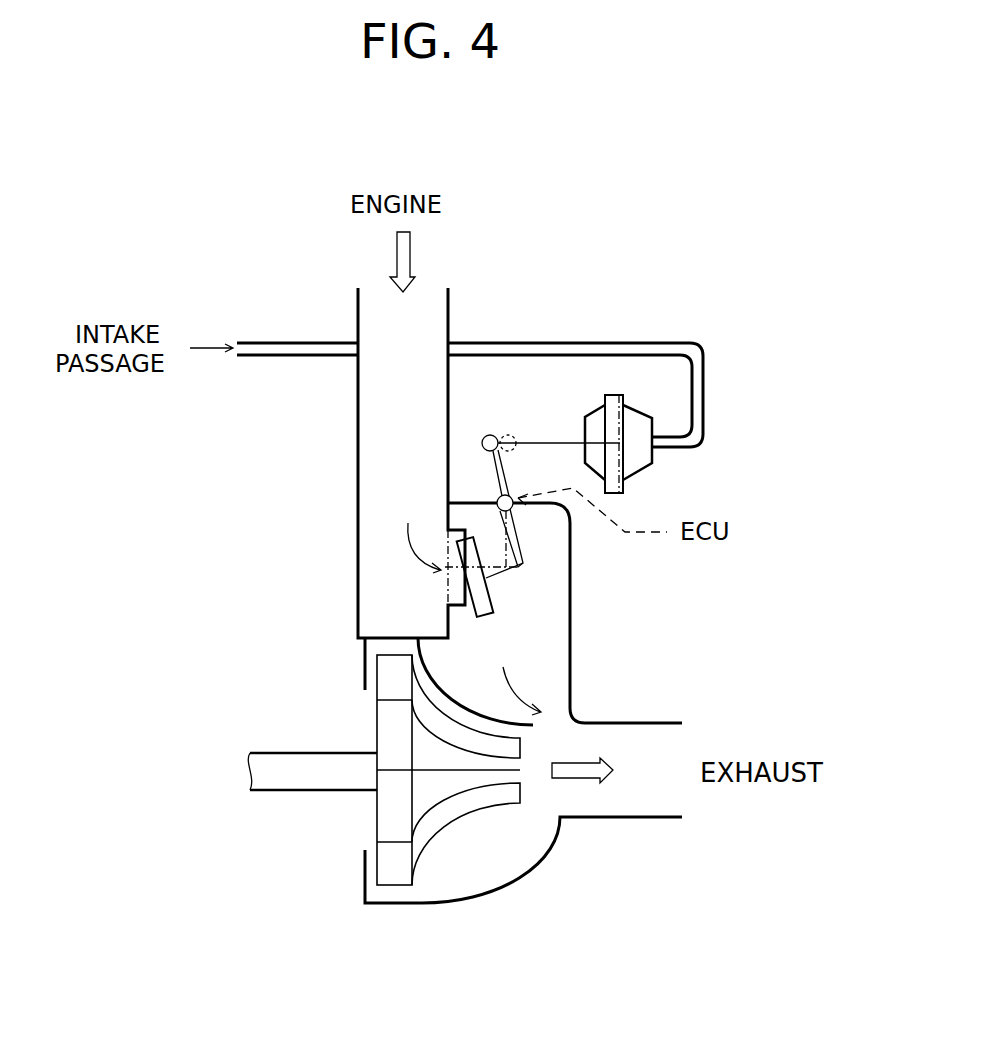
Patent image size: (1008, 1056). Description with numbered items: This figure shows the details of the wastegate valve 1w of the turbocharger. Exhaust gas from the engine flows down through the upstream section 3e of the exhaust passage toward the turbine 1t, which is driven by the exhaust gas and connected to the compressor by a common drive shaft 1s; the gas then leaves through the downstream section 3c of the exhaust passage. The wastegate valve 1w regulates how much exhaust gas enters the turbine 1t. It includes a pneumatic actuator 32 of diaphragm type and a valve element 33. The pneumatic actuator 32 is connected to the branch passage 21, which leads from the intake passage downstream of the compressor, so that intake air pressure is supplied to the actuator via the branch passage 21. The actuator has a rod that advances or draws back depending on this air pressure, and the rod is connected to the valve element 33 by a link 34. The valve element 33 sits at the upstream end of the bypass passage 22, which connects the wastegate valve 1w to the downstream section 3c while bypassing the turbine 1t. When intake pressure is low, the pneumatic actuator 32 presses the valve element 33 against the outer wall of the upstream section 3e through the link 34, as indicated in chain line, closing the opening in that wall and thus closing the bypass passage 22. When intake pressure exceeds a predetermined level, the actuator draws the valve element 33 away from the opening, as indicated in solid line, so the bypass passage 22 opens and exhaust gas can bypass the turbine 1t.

The branch passage 21 is at (556, 343).
The upstream section of the exhaust passage 3e is at (358, 491).
The pneumatic actuator 32 is at (652, 462).
The link 34 is at (517, 540).
The valve element 33 is at (482, 598).
The bypass passage 22 is at (533, 642).
The wastegate valve 1w is at (659, 602).
The drive shaft 1s is at (295, 782).
The turbine 1t is at (470, 808).
The downstream section of the exhaust passage 3c is at (620, 820).